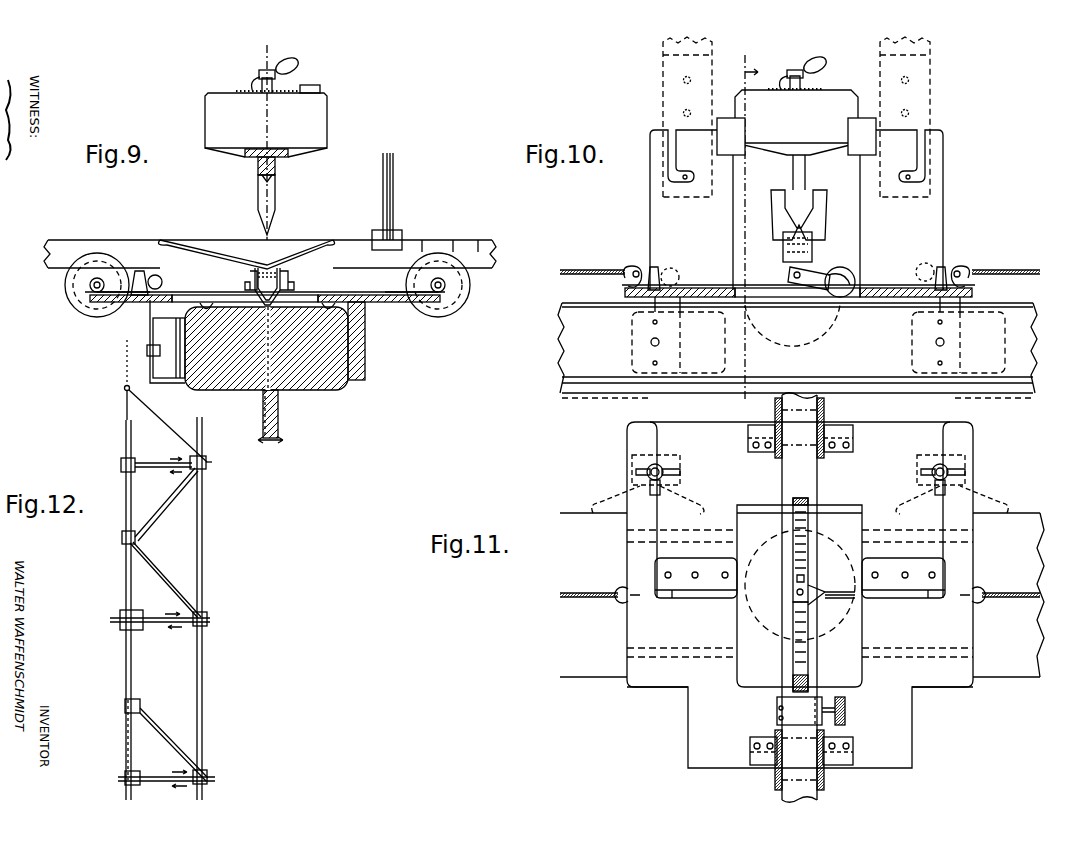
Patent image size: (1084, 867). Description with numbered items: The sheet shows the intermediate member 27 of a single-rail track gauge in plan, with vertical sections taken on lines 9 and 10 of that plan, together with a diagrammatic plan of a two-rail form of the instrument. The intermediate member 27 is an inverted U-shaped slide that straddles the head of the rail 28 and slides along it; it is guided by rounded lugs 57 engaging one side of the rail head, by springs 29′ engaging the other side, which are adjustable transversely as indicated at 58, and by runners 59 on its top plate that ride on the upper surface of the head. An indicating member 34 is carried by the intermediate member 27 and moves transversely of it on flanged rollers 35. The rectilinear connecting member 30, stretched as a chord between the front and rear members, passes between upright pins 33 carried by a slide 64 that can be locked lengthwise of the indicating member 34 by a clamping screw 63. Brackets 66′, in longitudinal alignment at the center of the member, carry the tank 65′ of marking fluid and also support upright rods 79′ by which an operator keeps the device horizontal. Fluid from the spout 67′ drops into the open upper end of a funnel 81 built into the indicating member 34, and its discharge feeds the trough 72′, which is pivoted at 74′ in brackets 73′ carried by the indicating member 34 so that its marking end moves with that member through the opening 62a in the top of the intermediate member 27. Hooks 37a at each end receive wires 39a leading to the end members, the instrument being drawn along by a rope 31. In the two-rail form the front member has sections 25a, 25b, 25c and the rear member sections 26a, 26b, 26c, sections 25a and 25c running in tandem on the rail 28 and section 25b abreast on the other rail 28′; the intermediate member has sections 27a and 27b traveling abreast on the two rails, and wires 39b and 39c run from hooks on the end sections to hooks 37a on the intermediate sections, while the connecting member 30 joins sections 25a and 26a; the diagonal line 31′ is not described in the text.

In FIG. 10, the section line 9— 9 is at (747, 226).
In FIG. 9, the section line 10— 10 is at (273, 252).
In FIG. 12, the front member section 25a is at (121, 465).
In FIG. 12, the front member section 25b is at (206, 460).
In FIG. 12, the front member section 25c is at (122, 539).
In FIG. 12, the rear member section 26a is at (125, 778).
In FIG. 12, the rear member section 26b is at (210, 782).
In FIG. 12, the rear member section 26c is at (125, 705).
In FIG. 11, the intermediate member 27 is at (800, 595).
In FIG. 12, the intermediate member section 27a is at (125, 612).
In FIG. 12, the intermediate member section 27b is at (208, 614).
In FIG. 9, the rail 28 is at (322, 384).
In FIG. 12, the rail 28 is at (130, 736).
In FIG. 10, the rail 28 is at (1035, 351).
In FIG. 11, the rail 28 is at (802, 595).
In FIG. 12, the other rail 28′ is at (203, 432).
In FIG. 9, the spring 29′ is at (165, 338).
In FIG. 10, the spring 29′ is at (690, 376).
In FIG. 11, the spring 29′ is at (700, 500).
In FIG. 9, the connecting member 30 is at (395, 185).
In FIG. 12, the connecting member 30 is at (134, 598).
In FIG. 12, the rope 31 is at (124, 397).
In FIG. 12, the diagonal brace 31′ is at (160, 410).
In FIG. 9, the upright pins 33 is at (390, 165).
In FIG. 11, the upright pins 33 is at (778, 718).
In FIG. 9, the indicating member 34 is at (120, 250).
In FIG. 10, the indicating member 34 is at (813, 248).
In FIG. 11, the indicating member 34 is at (810, 479).
In FIG. 9, the flanged rollers 35 is at (80, 307).
In FIG. 11, the flanged rollers 35 is at (826, 409).
In FIG. 10, the hooks 37a is at (624, 283).
In FIG. 11, the hooks 37a is at (636, 601).
In FIG. 10, the wires 39a is at (593, 270).
In FIG. 11, the wires 39a is at (592, 600).
In FIG. 12, the wire 39b is at (132, 570).
In FIG. 12, the wire 39c is at (203, 541).
In FIG. 9, the rounded lugs 57 is at (366, 340).
In FIG. 11, the rounded lugs 57 is at (660, 689).
In FIG. 9, the spring adjustment 58 is at (162, 283).
In FIG. 10, the spring adjustment 58 is at (675, 272).
In FIG. 11, the spring adjustment 58 is at (681, 472).
In FIG. 9, the runners 59 is at (207, 308).
In FIG. 10, the runners 59 is at (905, 300).
In FIG. 9, the opening 62a is at (330, 296).
In FIG. 10, the opening 62a is at (760, 290).
In FIG. 11, the opening 62a is at (870, 648).
In FIG. 11, the clamping screw 63 is at (846, 713).
In FIG. 9, the slide 64 is at (402, 233).
In FIG. 11, the slide 64 is at (800, 719).
In FIG. 9, the tank 65′ is at (266, 106).
In FIG. 10, the tank 65′ is at (796, 122).
In FIG. 11, the tank 65′ is at (770, 546).
In FIG. 10, the brackets 66′ is at (652, 211).
In FIG. 11, the brackets 66′ is at (700, 599).
In FIG. 9, the spout 67′ is at (276, 215).
In FIG. 9, the trough 72′ is at (262, 301).
In FIG. 10, the trough 72′ is at (832, 298).
In FIG. 11, the trough 72′ is at (840, 591).
In FIG. 9, the brackets 73′ is at (289, 276).
In FIG. 9, the pivot 74′ is at (250, 276).
In FIG. 10, the pivot 74′ is at (800, 291).
In FIG. 10, the rods 79′ is at (664, 45).
In FIG. 9, the funnel 81 is at (228, 244).
In FIG. 10, the funnel 81 is at (812, 233).
In FIG. 11, the funnel 81 is at (810, 528).